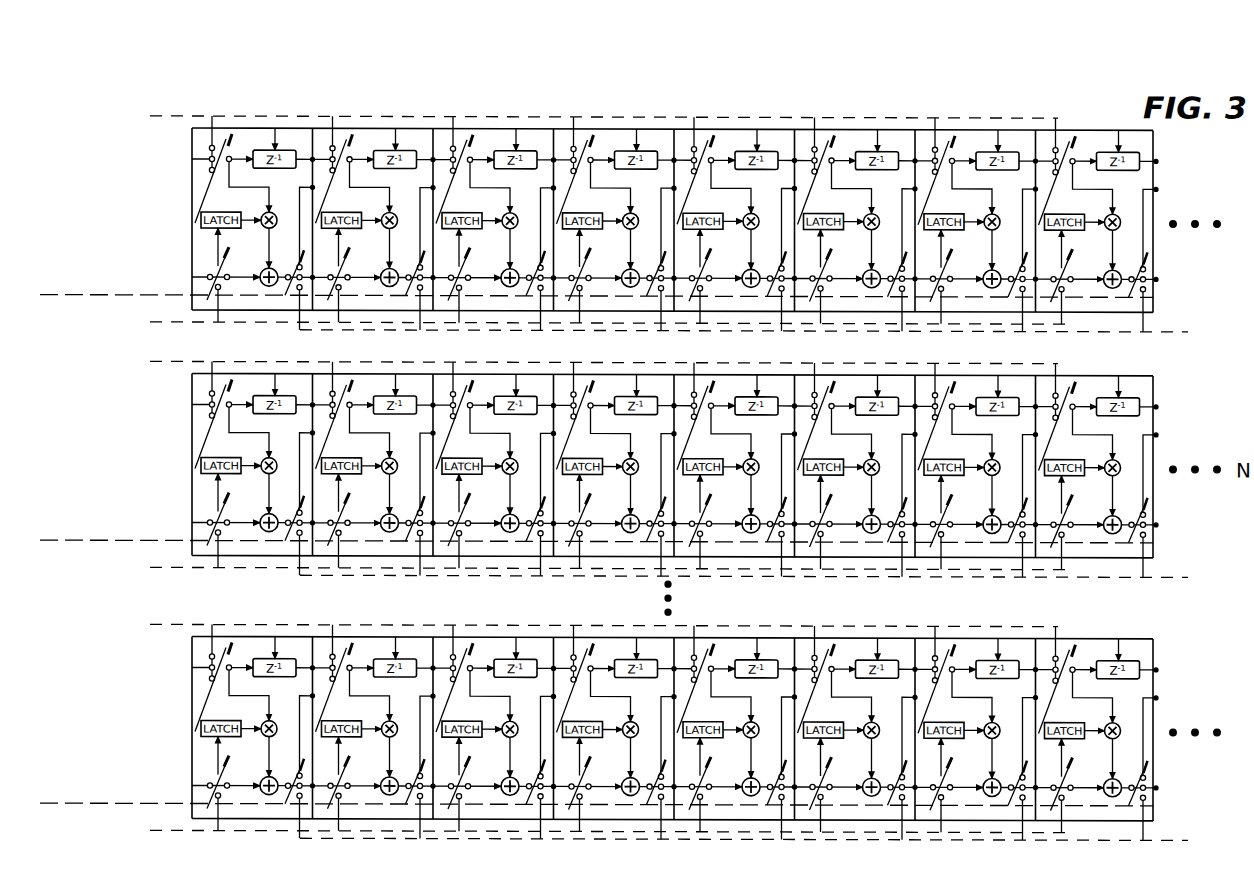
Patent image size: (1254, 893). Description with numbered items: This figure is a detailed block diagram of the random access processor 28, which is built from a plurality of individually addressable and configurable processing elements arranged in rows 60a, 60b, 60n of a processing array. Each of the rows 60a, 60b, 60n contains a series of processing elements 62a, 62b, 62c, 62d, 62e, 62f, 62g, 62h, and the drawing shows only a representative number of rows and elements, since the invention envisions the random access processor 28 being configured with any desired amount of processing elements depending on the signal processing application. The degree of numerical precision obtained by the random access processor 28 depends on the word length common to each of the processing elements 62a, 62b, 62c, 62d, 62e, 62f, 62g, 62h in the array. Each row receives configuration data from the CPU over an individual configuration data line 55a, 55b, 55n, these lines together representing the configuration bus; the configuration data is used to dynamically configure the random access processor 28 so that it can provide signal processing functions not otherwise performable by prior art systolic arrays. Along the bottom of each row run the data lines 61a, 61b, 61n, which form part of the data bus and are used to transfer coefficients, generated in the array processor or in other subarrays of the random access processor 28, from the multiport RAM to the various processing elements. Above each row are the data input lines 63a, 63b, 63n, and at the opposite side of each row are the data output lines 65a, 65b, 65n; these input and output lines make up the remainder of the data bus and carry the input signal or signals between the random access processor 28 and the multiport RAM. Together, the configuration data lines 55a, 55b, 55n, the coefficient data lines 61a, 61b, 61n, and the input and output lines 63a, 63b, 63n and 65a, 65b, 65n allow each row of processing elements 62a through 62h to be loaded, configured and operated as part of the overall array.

The random access processor 28 is at (320, 70).
The configuration data line 55a is at (107, 297).
The configuration data line 55b is at (107, 542).
The configuration data line 55n is at (107, 806).
The row of processing elements 60a is at (189, 188).
The row of processing elements 60b is at (189, 434).
The row of processing elements 60n is at (189, 696).
The data line 61a is at (591, 323).
The data line 61b is at (591, 568).
The data line 61n is at (591, 831).
The processing element 62a is at (266, 128).
The processing element 62b is at (386, 128).
The processing element 62c is at (507, 128).
The processing element 62d is at (636, 104).
The processing element 62e is at (748, 128).
The processing element 62f is at (868, 128).
The processing element 62g is at (998, 104).
The processing element 62h is at (1104, 128).
The data input line 63a is at (584, 113).
The data input line 63b is at (584, 358).
The data input line 63n is at (584, 621).
The data output line 65a is at (762, 330).
The data output line 65b is at (762, 576).
The data output line 65n is at (762, 839).